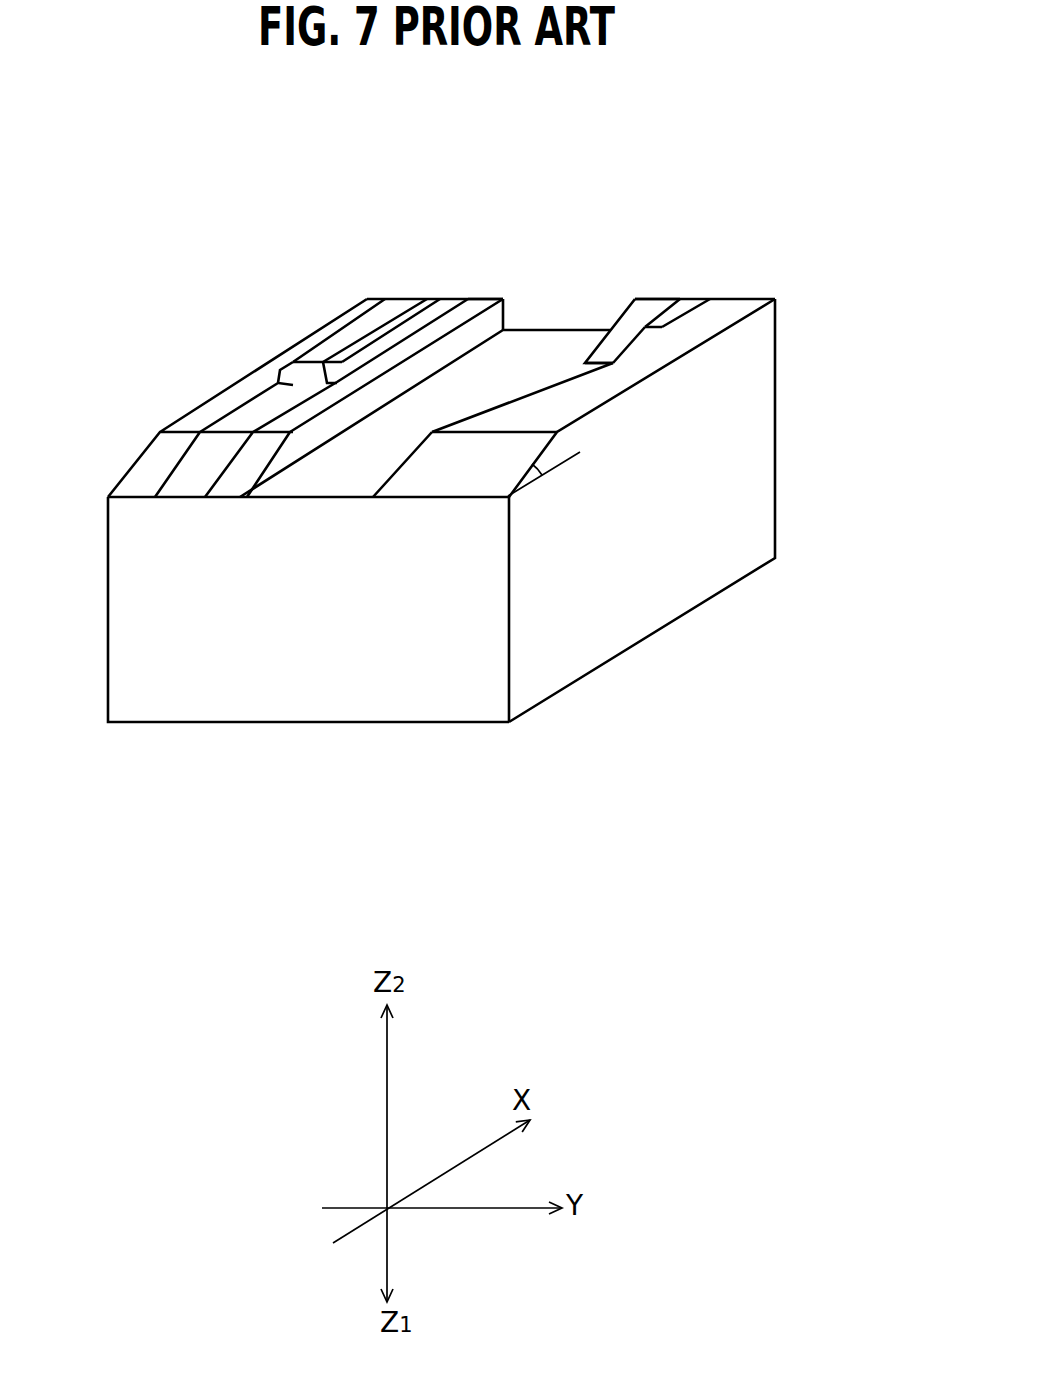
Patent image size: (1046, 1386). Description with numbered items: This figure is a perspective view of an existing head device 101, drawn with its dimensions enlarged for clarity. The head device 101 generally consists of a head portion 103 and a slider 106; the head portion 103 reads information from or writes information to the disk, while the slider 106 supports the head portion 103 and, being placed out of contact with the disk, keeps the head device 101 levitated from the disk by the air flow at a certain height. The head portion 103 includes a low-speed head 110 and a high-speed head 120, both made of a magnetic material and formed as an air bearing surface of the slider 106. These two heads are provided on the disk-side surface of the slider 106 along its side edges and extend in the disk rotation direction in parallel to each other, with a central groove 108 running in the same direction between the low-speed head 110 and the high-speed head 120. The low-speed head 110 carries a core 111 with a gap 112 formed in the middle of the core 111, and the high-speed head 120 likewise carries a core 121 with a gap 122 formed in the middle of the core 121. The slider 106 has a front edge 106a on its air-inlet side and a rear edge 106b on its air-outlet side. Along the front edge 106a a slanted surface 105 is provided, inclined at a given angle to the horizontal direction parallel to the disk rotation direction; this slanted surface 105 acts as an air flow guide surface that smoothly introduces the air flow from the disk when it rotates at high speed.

The head device 101 is at (198, 135).
The head portion 103 is at (478, 297).
The slanted surface 105 is at (142, 480).
The slider 106 is at (768, 443).
The front edge 106a is at (512, 497).
The rear edge 106b is at (775, 297).
The central groove 108 is at (315, 480).
The low-speed head 110 is at (432, 288).
The core 111 is at (237, 420).
The gap 112 is at (265, 395).
The high-speed head 120 is at (700, 289).
The core 121 is at (617, 348).
The gap 122 is at (655, 327).